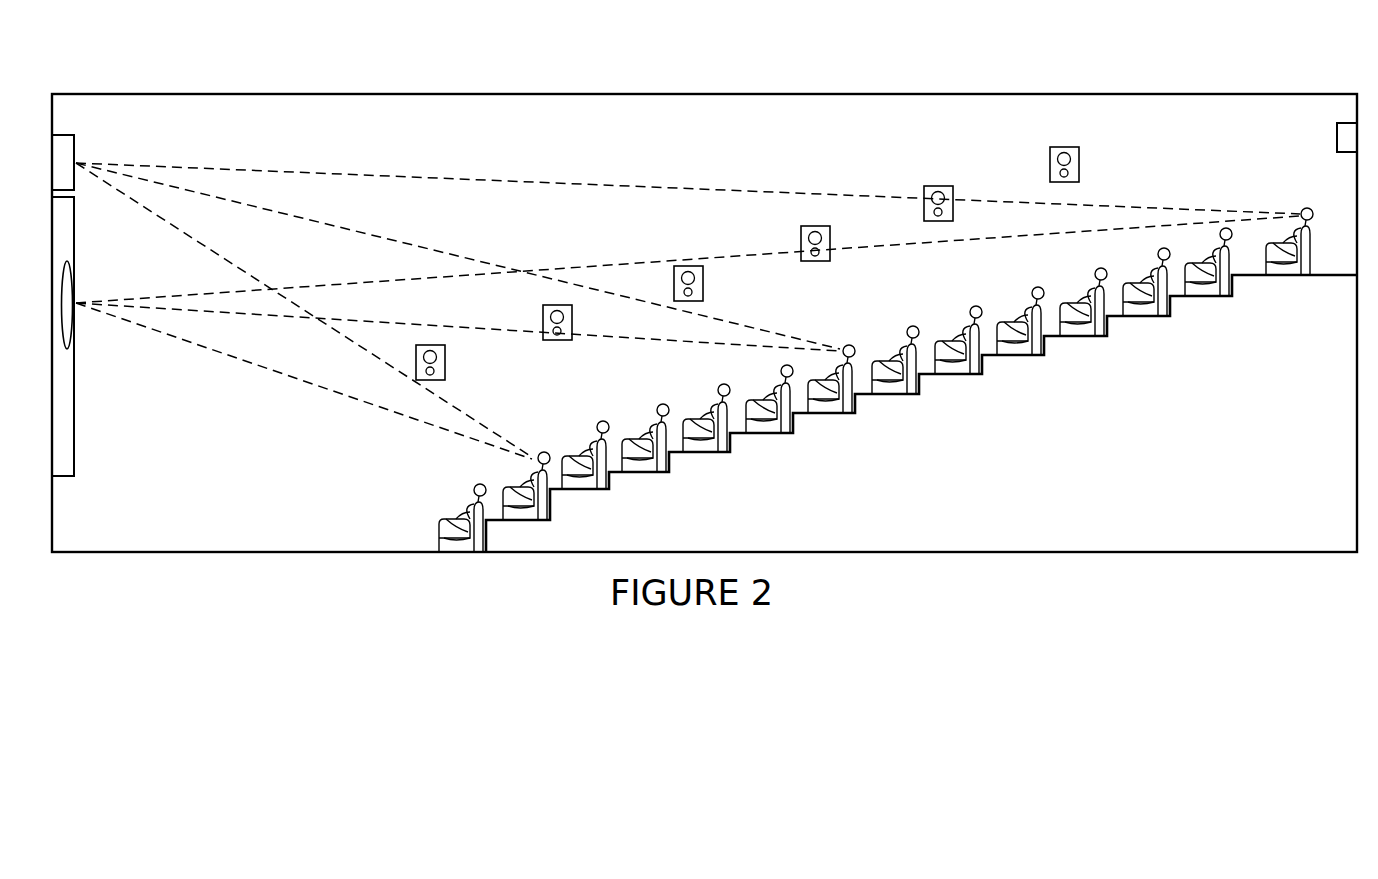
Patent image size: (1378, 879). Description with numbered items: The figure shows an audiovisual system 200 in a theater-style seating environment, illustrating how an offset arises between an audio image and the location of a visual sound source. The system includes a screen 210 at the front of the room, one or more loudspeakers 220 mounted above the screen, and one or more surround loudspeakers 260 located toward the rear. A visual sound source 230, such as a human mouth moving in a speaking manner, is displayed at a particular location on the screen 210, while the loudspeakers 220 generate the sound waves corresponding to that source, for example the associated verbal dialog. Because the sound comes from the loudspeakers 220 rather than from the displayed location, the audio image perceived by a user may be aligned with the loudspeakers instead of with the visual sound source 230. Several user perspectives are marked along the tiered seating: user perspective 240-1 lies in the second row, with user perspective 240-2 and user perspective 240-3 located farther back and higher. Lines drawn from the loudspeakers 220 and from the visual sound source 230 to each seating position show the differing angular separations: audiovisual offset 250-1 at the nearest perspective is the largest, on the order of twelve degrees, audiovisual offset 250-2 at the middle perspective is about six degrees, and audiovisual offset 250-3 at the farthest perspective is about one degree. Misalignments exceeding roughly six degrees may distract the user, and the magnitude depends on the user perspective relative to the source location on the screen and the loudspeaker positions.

The audiovisual system 200 is at (1292, 62).
The screen 210 is at (79, 458).
The loudspeakers 220 is at (172, 140).
The visual sound source 230 is at (148, 361).
The user perspective 240-1 is at (702, 537).
The user perspective 240-2 is at (970, 451).
The user perspective 240-3 is at (1282, 289).
The audiovisual offset 250-1 is at (435, 398).
The audiovisual offset 250-2 is at (680, 313).
The audiovisual offset 250-3 is at (1038, 232).
The surround loudspeakers 260 is at (1330, 138).